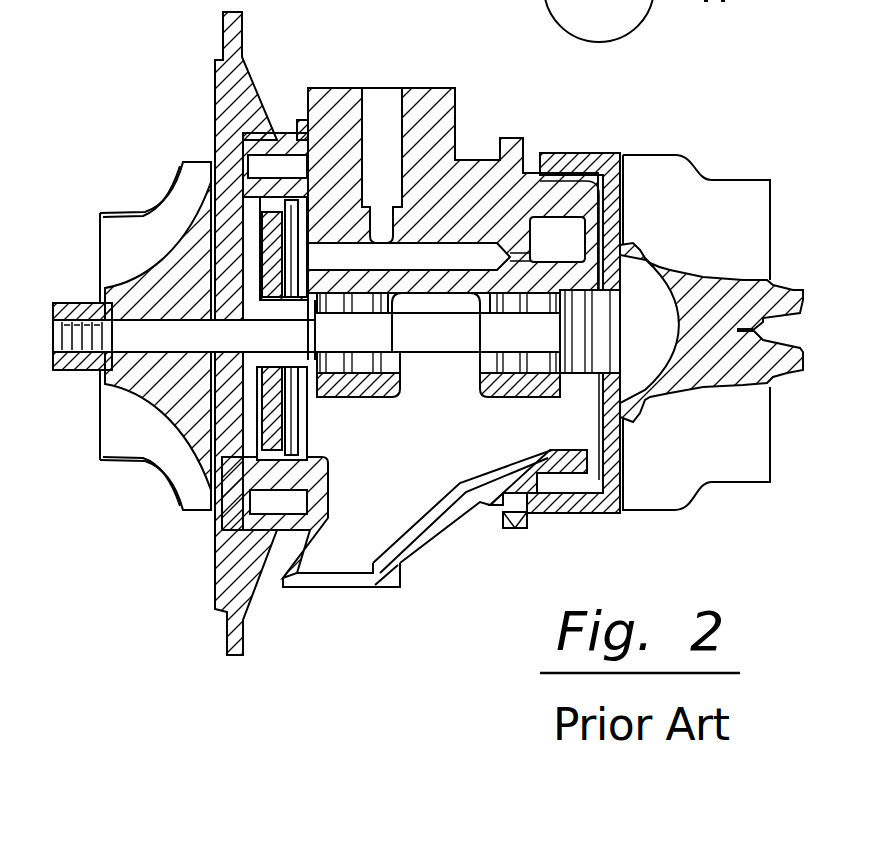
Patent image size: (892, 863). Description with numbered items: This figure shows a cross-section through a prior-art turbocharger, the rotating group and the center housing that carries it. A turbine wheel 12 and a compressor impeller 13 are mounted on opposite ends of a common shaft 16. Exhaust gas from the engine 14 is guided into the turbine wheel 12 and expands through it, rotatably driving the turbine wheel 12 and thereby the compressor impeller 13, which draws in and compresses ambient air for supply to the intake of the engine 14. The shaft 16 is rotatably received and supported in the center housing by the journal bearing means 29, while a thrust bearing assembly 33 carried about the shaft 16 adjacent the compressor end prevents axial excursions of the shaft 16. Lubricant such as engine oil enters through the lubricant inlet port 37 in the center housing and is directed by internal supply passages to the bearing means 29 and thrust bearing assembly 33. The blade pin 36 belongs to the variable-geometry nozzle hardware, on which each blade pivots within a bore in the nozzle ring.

The turbine wheel 12 is at (755, 227).
The compressor impeller 13 is at (168, 192).
The engine 14 is at (577, 152).
The common shaft 16 is at (453, 348).
The bearing means 29 is at (523, 393).
The thrust bearing assembly 33 is at (312, 400).
The blade pin 36 is at (455, 104).
The lubricant inlet port 37 is at (392, 100).